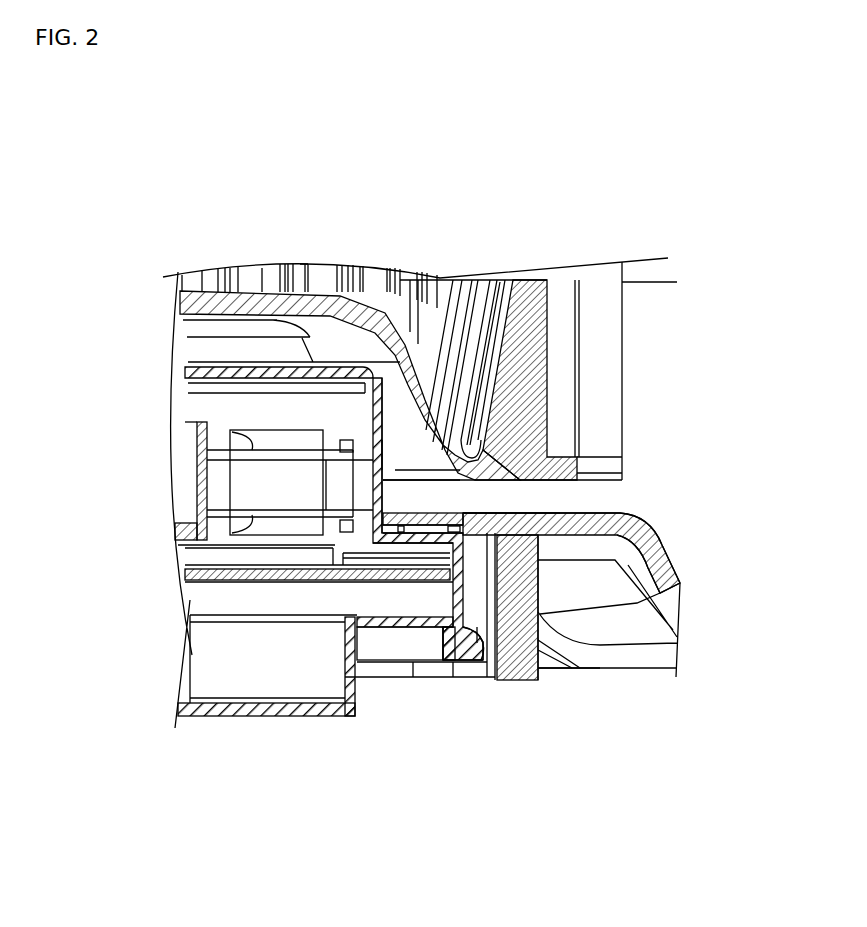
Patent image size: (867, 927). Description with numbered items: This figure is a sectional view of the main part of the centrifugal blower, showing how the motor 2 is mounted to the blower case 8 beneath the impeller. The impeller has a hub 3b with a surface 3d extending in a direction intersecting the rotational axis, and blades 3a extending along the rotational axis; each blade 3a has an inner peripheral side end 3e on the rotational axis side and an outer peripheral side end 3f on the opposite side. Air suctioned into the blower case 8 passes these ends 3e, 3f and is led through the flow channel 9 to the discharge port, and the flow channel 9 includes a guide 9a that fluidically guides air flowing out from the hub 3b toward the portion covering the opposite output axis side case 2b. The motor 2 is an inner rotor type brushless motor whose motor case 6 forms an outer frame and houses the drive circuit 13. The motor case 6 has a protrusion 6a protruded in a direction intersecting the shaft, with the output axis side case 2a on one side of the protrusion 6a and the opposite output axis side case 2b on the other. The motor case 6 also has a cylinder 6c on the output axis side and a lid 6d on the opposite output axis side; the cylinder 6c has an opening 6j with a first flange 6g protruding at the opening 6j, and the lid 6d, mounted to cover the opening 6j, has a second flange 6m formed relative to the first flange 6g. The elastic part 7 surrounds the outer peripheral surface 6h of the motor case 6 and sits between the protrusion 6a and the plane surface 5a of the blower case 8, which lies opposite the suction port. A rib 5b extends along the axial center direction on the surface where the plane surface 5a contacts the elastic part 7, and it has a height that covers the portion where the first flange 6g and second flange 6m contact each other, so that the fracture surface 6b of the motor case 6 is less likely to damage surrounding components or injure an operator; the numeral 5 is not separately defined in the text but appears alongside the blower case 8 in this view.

The motor 2 is at (242, 643).
The output axis side case 2a is at (392, 475).
The opposite output axis side case 2b is at (573, 663).
The blades 3a is at (527, 313).
The hub 3b is at (445, 290).
The surface 3d is at (445, 290).
The inner peripheral side end 3e is at (493, 295).
The outer peripheral side end 3f is at (553, 325).
The bracket 5 is at (600, 513).
The blower case 8 is at (600, 513).
The plane surface 5a is at (460, 517).
The rib 5b is at (538, 668).
The motor case 6 is at (220, 374).
The protrusion 6a is at (393, 543).
The fracture surface 6b is at (508, 680).
The cylinder 6c is at (392, 436).
The outer peripheral surface 6h is at (392, 436).
The lid 6d is at (255, 717).
The first flange 6g is at (470, 655).
The opening 6j is at (405, 597).
The second flange 6m is at (460, 662).
The elastic part 7 is at (490, 513).
The flow channel 9 is at (667, 523).
The guide 9a is at (663, 548).
The drive circuit 13 is at (193, 577).